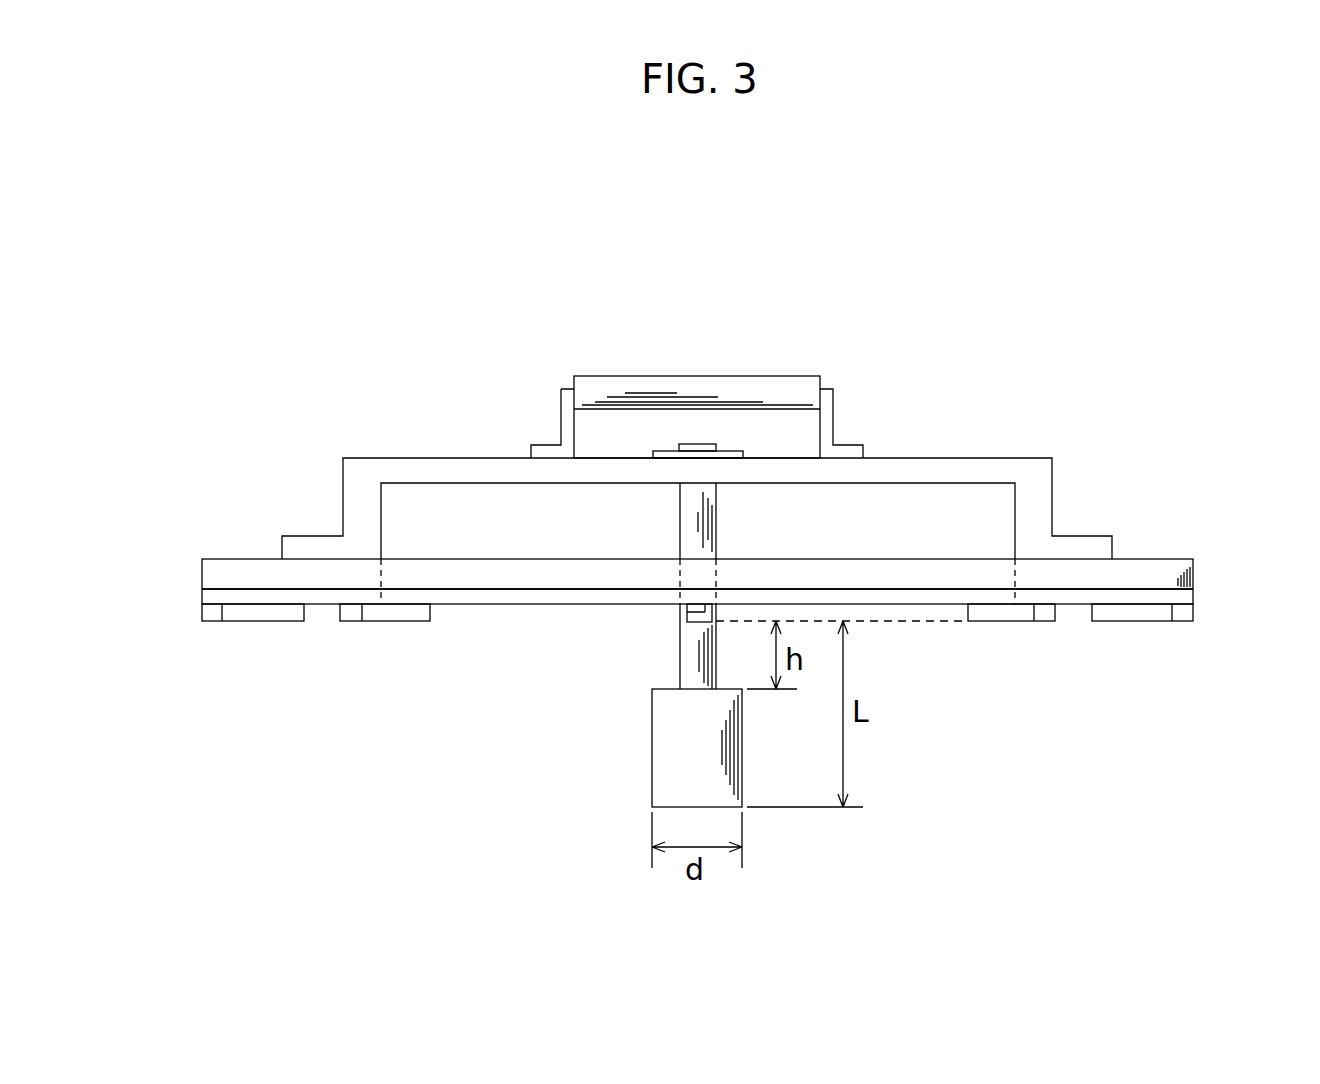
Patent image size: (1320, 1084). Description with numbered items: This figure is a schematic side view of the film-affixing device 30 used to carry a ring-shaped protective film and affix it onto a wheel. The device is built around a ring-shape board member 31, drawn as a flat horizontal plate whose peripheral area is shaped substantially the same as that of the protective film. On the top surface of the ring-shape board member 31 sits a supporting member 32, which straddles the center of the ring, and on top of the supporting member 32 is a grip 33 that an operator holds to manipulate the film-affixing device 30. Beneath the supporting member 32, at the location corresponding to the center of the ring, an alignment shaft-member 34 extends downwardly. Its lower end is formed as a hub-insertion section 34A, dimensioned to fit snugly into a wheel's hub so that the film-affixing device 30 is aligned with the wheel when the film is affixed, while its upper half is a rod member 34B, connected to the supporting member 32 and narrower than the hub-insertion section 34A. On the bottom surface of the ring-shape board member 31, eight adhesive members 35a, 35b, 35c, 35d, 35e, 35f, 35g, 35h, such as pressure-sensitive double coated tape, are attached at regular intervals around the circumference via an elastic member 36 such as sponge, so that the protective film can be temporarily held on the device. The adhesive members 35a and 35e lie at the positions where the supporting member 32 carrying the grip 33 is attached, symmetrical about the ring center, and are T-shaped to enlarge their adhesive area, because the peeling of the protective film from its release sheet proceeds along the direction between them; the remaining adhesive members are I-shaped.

The film-affixing device 30 is at (1120, 372).
The ring-shape board member 31 is at (215, 578).
The supporting member 32 is at (358, 490).
The grip 33 is at (702, 393).
The alignment shaft-member 34 is at (758, 623).
The hub-insertion section 34A is at (688, 768).
The rod member 34B is at (690, 522).
The adhesive member 35a is at (255, 622).
The adhesive member 35b is at (386, 676).
The adhesive member 35c is at (615, 655).
The adhesive member 35d is at (1011, 677).
The adhesive member 35e is at (1143, 623).
The adhesive member 35f is at (1013, 623).
The adhesive member 35g is at (684, 613).
The adhesive member 35h is at (387, 622).
The elastic member 36 is at (1180, 597).